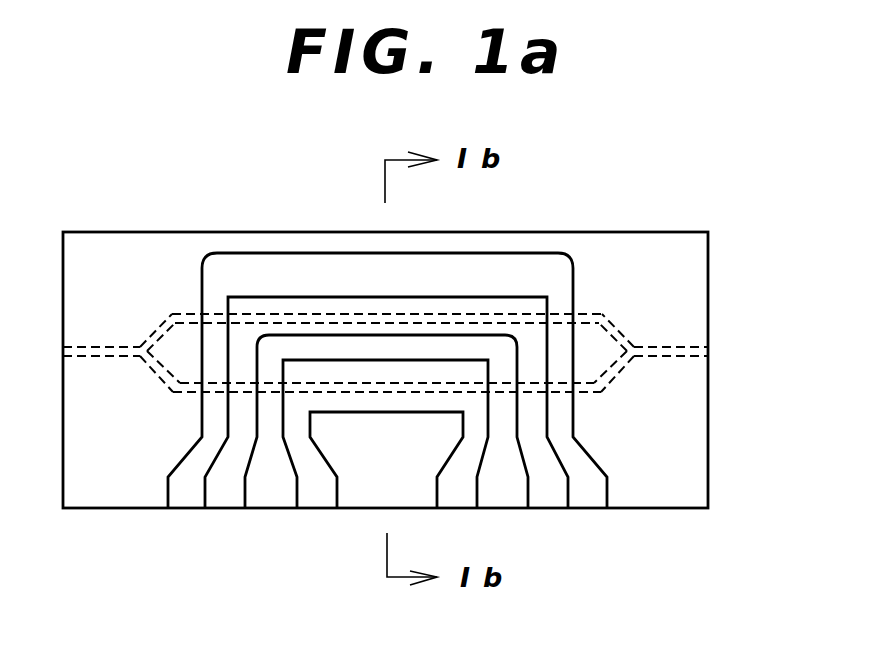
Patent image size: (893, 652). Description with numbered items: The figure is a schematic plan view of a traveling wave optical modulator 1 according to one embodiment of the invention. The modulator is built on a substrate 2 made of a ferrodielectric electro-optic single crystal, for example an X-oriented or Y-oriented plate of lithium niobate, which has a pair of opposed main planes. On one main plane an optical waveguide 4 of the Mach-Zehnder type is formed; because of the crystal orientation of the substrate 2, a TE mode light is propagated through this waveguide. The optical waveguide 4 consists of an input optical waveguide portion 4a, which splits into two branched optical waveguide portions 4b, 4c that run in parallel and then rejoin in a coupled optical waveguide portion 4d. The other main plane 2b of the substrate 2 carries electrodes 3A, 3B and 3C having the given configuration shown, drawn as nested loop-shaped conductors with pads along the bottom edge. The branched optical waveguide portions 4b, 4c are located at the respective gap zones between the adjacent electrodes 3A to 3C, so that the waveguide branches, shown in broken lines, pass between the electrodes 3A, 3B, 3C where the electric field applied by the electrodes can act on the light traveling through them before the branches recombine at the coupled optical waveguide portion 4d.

The traveling wave optical modulator 1 is at (665, 197).
The substrate 2 is at (675, 257).
The main plane 2b is at (582, 245).
The electrode 3A is at (297, 280).
The electrode 3B is at (268, 438).
The electrode 3C is at (358, 492).
The optical waveguide 4 is at (385, 360).
The input optical waveguide portion 4a is at (113, 347).
The branched optical waveguide portion 4b is at (362, 312).
The branched optical waveguide portion 4c is at (393, 392).
The coupled optical waveguide portion 4d is at (670, 355).